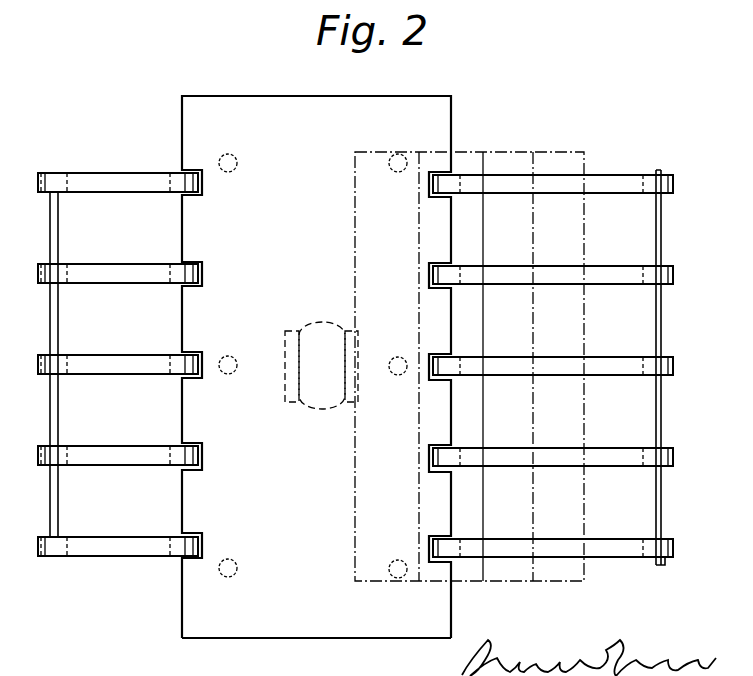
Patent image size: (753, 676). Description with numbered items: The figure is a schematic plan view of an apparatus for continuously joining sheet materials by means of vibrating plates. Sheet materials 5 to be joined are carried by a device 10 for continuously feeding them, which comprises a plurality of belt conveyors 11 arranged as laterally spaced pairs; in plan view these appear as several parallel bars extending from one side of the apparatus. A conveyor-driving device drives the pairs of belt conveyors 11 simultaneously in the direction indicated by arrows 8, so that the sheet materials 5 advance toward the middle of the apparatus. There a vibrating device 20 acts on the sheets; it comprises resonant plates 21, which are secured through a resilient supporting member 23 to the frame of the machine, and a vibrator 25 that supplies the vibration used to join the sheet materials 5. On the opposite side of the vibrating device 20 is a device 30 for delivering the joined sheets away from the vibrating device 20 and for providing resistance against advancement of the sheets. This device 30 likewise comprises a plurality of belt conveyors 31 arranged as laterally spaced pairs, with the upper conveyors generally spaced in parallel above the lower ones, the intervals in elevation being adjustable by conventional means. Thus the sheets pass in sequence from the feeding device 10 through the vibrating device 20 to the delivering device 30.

The sheet materials 5 is at (566, 163).
The arrows 8 is at (628, 325).
The device for continuously feeding sheet materials 10 is at (566, 347).
The belt conveyors 11 is at (619, 552).
The vibrating device 20 is at (417, 92).
The resonant plates 21 is at (376, 631).
The resilient supporting member 23 is at (237, 157).
The vibrator 25 is at (314, 410).
The device for removing the joined sheets 30 is at (118, 344).
The belt conveyors 31 is at (124, 548).